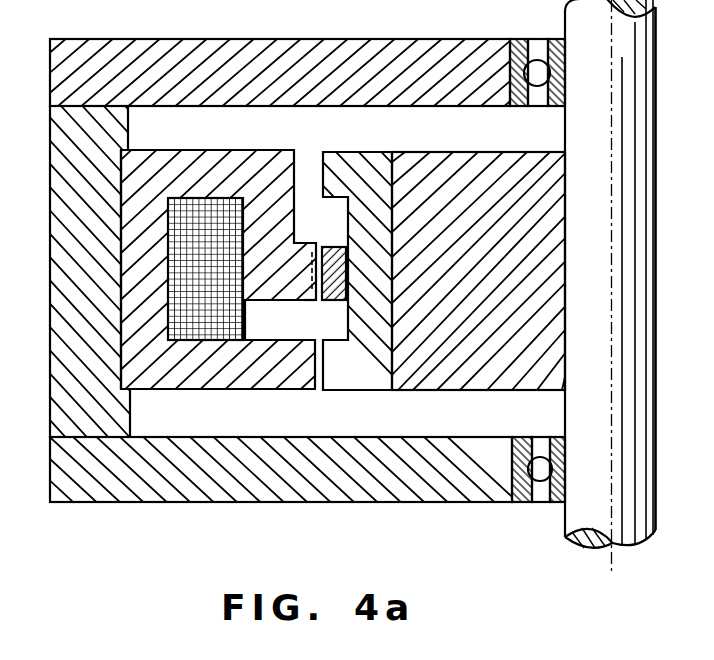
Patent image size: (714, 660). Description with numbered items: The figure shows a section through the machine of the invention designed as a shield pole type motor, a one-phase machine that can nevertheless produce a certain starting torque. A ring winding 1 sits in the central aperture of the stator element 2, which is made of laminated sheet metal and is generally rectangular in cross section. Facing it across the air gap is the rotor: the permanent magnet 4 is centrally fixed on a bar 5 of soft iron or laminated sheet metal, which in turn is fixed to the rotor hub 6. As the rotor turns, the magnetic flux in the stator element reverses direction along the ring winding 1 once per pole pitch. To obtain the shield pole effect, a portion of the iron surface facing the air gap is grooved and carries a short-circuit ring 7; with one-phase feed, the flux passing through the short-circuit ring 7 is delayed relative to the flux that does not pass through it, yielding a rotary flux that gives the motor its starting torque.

The ring winding 1 is at (188, 343).
The stator element 2 is at (206, 163).
The permanent magnet 4 is at (342, 247).
The bar of soft iron or laminated sheet metal 5 is at (365, 162).
The rotor hub 6 is at (468, 378).
The short-circuit ring 7 is at (312, 300).